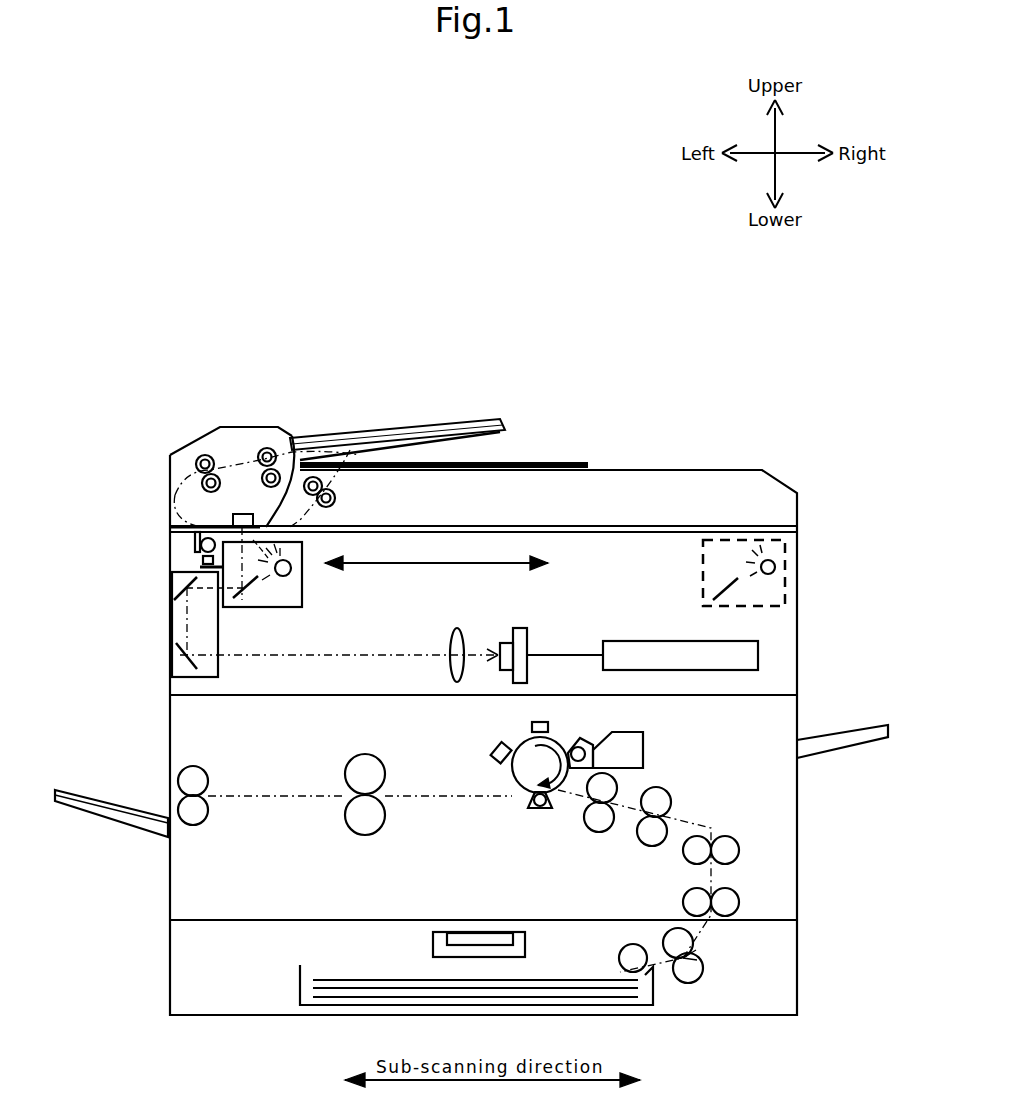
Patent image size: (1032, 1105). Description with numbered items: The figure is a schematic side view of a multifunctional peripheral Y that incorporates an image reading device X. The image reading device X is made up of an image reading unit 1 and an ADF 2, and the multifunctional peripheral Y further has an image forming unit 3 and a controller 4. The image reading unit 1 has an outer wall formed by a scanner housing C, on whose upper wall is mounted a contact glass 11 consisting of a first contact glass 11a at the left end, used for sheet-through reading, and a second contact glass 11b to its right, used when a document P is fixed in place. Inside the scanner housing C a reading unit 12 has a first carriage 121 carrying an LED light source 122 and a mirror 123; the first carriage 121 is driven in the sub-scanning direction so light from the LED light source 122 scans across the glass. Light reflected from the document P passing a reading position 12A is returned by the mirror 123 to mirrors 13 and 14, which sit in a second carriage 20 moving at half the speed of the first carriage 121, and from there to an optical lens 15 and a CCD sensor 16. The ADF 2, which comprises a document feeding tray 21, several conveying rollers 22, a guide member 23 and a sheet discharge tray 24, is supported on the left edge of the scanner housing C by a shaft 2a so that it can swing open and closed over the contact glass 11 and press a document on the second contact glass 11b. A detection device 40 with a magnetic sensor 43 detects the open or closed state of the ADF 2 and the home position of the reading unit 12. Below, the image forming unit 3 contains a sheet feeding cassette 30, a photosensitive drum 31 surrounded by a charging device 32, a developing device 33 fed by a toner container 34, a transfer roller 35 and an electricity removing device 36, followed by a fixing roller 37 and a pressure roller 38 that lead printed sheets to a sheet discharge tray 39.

The image reading unit 1 is at (797, 575).
The ADF 2 is at (797, 520).
The shaft 2a is at (170, 527).
The image forming unit 3 is at (797, 845).
The controller 4 is at (760, 652).
The contact glass 11 is at (522, 445).
The first contact glass 11a is at (282, 523).
The second contact glass 11b is at (612, 530).
The reading unit 12 is at (308, 556).
The reading position 12A is at (200, 478).
The first carriage 121 is at (282, 608).
The LED light source 122 is at (302, 572).
The mirror 123 is at (242, 600).
The mirror 13 is at (178, 590).
The mirror 14 is at (178, 665).
The optical lens 15 is at (450, 632).
The CCD sensor 16 is at (512, 632).
The second carriage 20 is at (187, 680).
The document feeding tray 21 is at (452, 422).
The conveying rollers 22 is at (202, 455).
The guide member 23 is at (242, 515).
The sheet discharge tray 24 is at (512, 465).
The sheet feeding cassette 30 is at (660, 990).
The photosensitive drum 31 is at (514, 788).
The charging device 32 is at (530, 725).
The developing device 33 is at (590, 745).
The toner container 34 is at (644, 750).
The transfer roller 35 is at (540, 812).
The electricity removing device 36 is at (495, 748).
The fixing roller 37 is at (365, 752).
The pressure roller 38 is at (350, 828).
The sheet discharge tray 39 is at (135, 833).
The detection device 40 is at (183, 552).
The magnetic sensor 43 is at (200, 560).
The scanner housing C is at (712, 528).
The document P is at (398, 434).
The image reading device X is at (853, 487).
The multifunctional peripheral Y is at (135, 418).